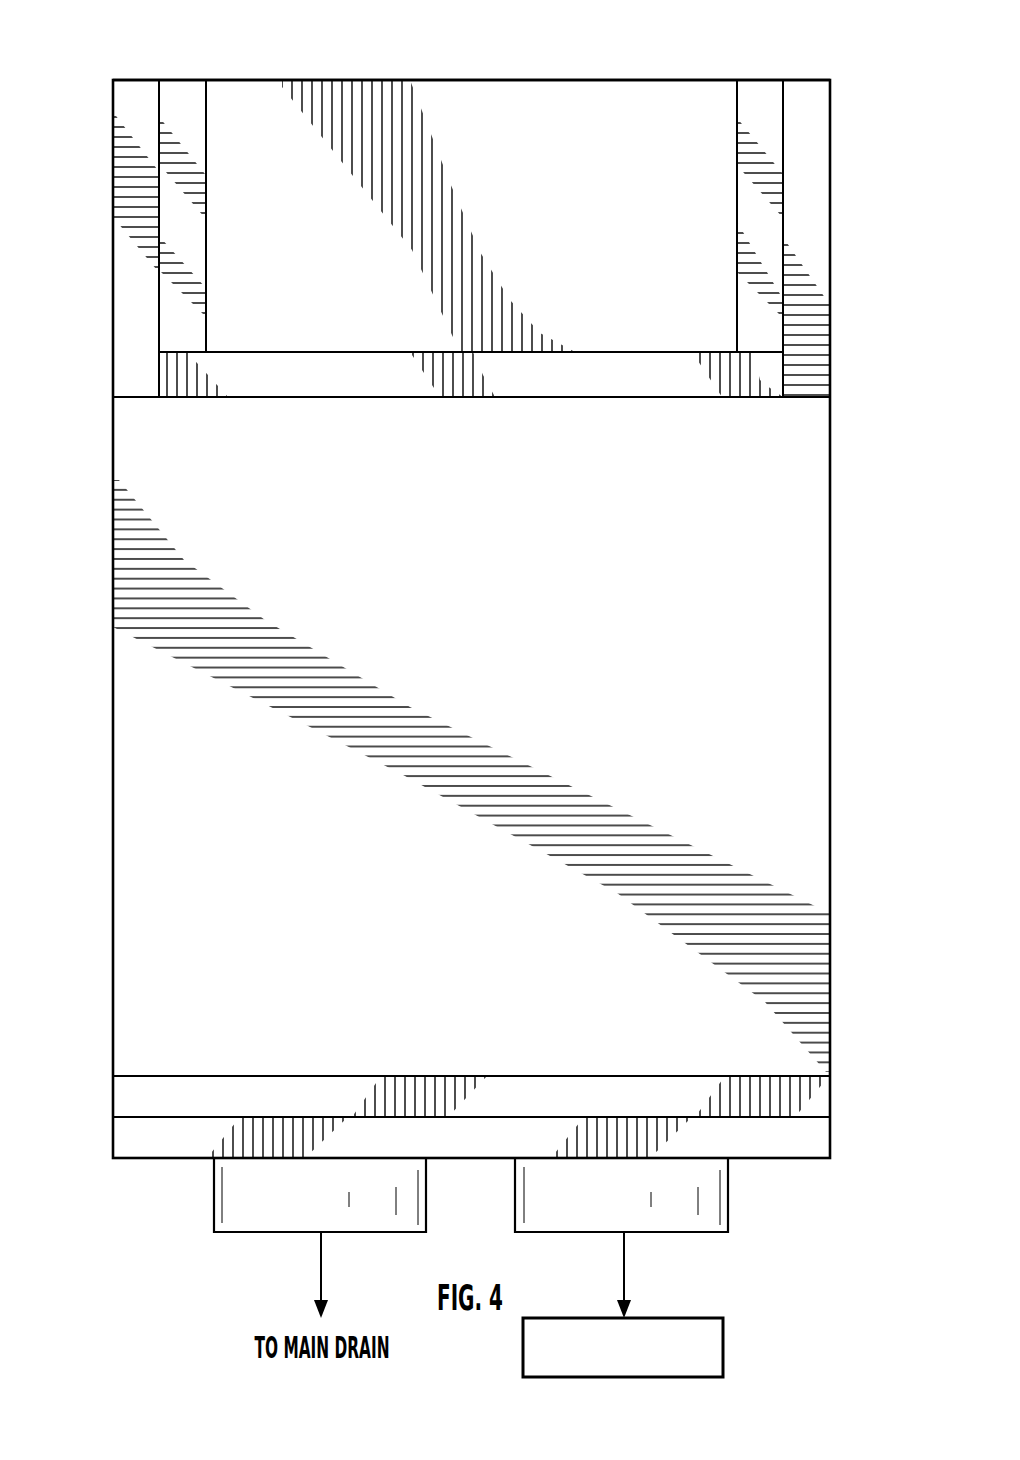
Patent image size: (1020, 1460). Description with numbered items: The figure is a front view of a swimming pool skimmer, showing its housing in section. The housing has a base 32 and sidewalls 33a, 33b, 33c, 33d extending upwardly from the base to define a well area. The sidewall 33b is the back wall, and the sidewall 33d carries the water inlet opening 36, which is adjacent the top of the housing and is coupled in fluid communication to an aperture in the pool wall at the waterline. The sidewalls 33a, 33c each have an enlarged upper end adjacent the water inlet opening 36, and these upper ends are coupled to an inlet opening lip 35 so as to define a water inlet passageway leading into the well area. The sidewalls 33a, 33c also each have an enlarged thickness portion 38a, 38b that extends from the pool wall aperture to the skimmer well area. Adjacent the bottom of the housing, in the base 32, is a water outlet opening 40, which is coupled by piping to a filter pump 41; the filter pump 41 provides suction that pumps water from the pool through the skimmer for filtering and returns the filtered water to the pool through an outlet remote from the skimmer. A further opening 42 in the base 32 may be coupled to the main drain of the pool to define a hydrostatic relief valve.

The base 32 is at (152, 1100).
The sidewall 33a is at (137, 125).
The sidewall 33b is at (553, 79).
The sidewall 33c is at (812, 180).
The sidewall 33d is at (178, 497).
The inlet opening lip 35 is at (655, 369).
The water inlet opening 36 is at (310, 243).
The enlarged thickness portion 38a is at (182, 97).
The enlarged thickness portion 38b is at (758, 104).
The water outlet opening 40 is at (650, 1233).
The filter pump 41 is at (725, 1340).
The opening 42 is at (250, 1230).